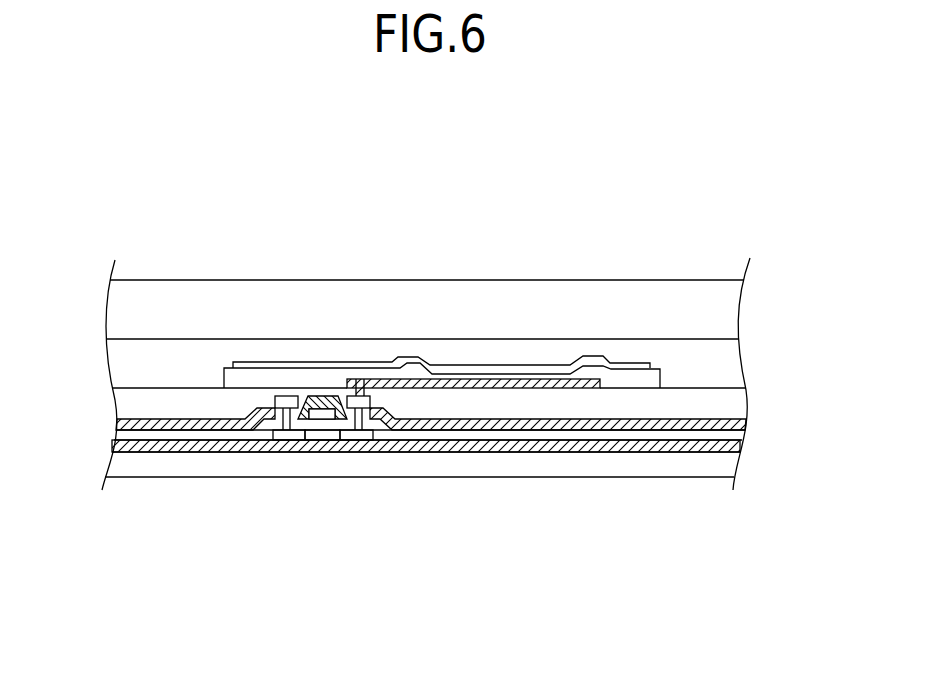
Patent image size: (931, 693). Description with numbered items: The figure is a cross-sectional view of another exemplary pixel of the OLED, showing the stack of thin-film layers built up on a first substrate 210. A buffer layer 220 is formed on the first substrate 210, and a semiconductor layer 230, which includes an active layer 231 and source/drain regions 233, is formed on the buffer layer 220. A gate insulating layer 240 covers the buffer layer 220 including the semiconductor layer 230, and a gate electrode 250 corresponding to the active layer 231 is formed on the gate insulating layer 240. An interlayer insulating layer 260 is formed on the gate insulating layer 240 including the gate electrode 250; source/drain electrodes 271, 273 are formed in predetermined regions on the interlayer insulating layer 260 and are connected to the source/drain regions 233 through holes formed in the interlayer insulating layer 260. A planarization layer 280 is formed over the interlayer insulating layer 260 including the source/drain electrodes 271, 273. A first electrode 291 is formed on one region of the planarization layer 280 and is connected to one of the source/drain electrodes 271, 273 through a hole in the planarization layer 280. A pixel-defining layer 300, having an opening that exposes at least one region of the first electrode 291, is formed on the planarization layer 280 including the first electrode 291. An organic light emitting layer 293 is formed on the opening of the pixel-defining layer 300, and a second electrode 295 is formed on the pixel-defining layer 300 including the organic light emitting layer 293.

The first substrate 210 is at (728, 465).
The buffer layer 220 is at (741, 449).
The semiconductor layer 230 is at (442, 380).
The active layer 231 is at (320, 434).
The source/drain regions 233 is at (287, 434).
The gate insulating layer 240 is at (736, 435).
The gate electrode 250 is at (322, 413).
The interlayer insulating layer 260 is at (745, 424).
The source/drain electrode 271 is at (283, 402).
The source/drain electrode 273 is at (361, 402).
The planarization layer 280 is at (134, 405).
The first electrode 291 is at (554, 371).
The organic light emitting layer 293 is at (506, 375).
The second electrode 295 is at (457, 373).
The pixel-defining layer 300 is at (645, 378).